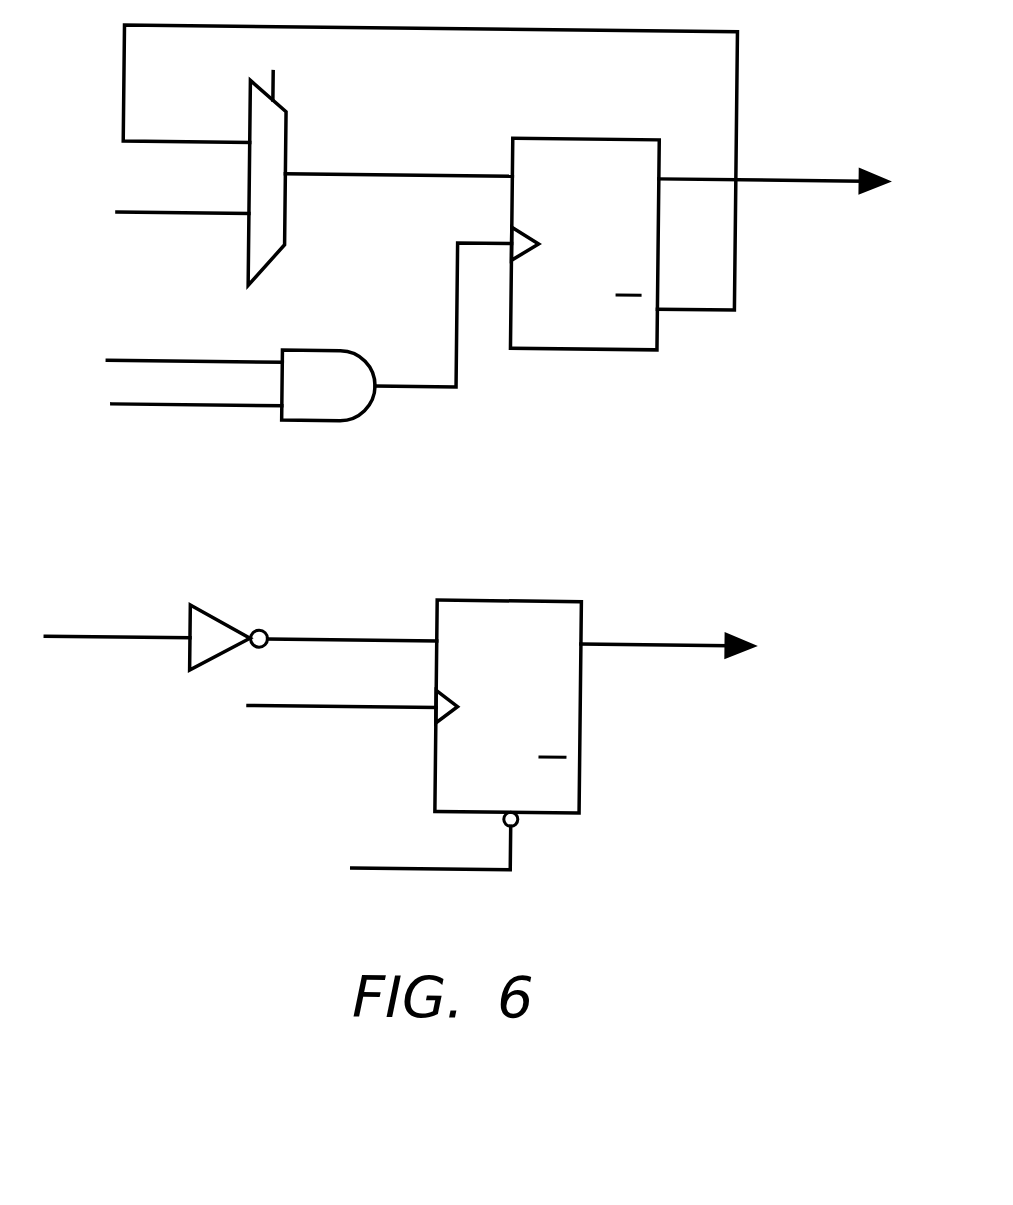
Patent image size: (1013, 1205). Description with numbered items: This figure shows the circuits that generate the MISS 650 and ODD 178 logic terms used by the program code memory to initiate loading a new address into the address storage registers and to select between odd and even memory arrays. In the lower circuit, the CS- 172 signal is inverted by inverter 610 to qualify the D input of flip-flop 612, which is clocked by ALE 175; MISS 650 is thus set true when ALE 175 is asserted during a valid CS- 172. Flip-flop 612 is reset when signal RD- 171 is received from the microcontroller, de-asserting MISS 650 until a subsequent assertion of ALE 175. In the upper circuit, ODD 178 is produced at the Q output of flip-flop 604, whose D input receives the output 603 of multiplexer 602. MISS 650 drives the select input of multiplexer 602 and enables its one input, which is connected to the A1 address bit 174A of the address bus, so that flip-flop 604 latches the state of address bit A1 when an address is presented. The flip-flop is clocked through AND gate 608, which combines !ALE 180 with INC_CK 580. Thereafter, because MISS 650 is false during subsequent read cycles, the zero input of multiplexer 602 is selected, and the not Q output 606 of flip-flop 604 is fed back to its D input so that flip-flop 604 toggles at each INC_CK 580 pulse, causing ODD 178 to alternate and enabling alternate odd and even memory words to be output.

The MISS 650 is at (286, 93).
The multiplexer 602 is at (289, 230).
The output of multiplexer 603 is at (408, 165).
The flip-flop 604 is at (588, 132).
The A1 address bit 174A is at (184, 218).
The ODD 178 is at (819, 182).
The not Q output 606 is at (726, 305).
The AND gate 608 is at (326, 346).
The !ALE 180 is at (232, 359).
The INC_CK 580 is at (252, 407).
The CS- 172 is at (144, 643).
The inverter 610 is at (212, 611).
The ALE 175 is at (390, 707).
The flip-flop 612 is at (519, 594).
The RD- 171 is at (467, 869).